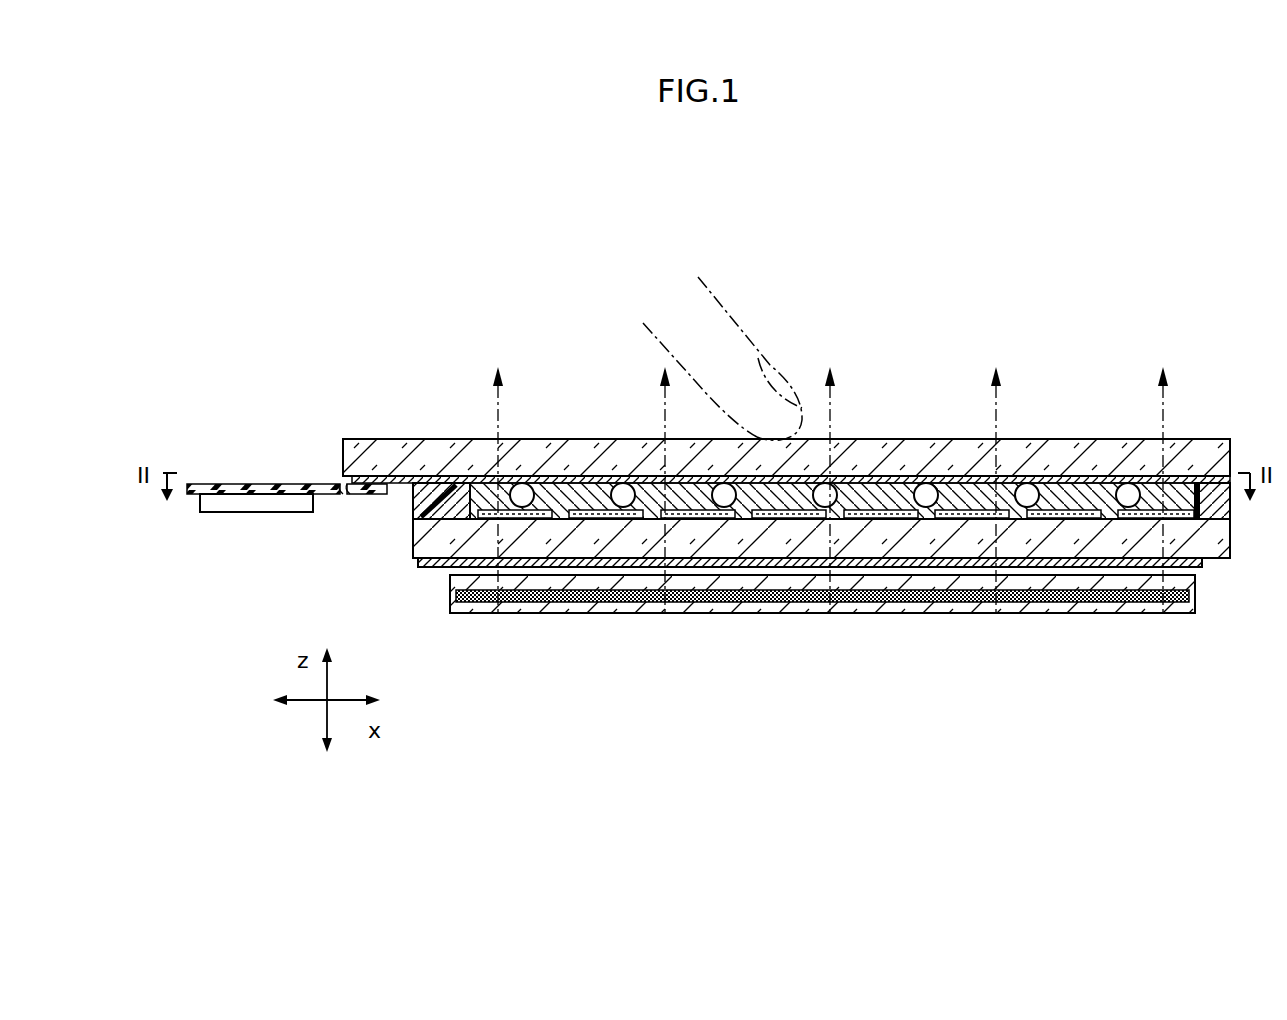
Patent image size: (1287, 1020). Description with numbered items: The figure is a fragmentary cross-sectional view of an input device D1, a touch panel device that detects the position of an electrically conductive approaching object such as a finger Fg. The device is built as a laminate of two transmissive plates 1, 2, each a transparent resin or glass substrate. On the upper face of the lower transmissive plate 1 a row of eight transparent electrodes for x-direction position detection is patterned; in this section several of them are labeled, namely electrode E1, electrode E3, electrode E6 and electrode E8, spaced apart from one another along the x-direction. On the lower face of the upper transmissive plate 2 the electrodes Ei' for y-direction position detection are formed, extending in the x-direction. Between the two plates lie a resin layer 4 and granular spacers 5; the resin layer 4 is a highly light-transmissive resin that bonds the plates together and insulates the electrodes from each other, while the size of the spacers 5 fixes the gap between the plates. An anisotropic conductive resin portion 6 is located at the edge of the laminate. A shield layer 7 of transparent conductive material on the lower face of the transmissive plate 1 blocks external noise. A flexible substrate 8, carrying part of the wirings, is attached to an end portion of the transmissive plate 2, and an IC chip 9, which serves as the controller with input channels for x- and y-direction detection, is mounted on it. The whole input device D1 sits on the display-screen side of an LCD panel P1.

The input device D1 is at (182, 357).
The transmissive plate 1 is at (800, 543).
The transmissive plate 2 is at (452, 455).
The resin layer 4 is at (1090, 490).
The spacer 5 is at (622, 484).
The anisotropic conductive resin portion 6 is at (427, 504).
The shield layer 7 is at (1050, 568).
The flexible substrate 8 is at (272, 483).
The IC chip 9 is at (285, 506).
The electrode E1 is at (516, 521).
The electrode E3 is at (700, 521).
The electrode E6 is at (963, 521).
The electrode E8 is at (1142, 521).
The electrode Ei' is at (791, 415).
The LCD panel P1 is at (556, 606).
The finger Fg is at (728, 314).